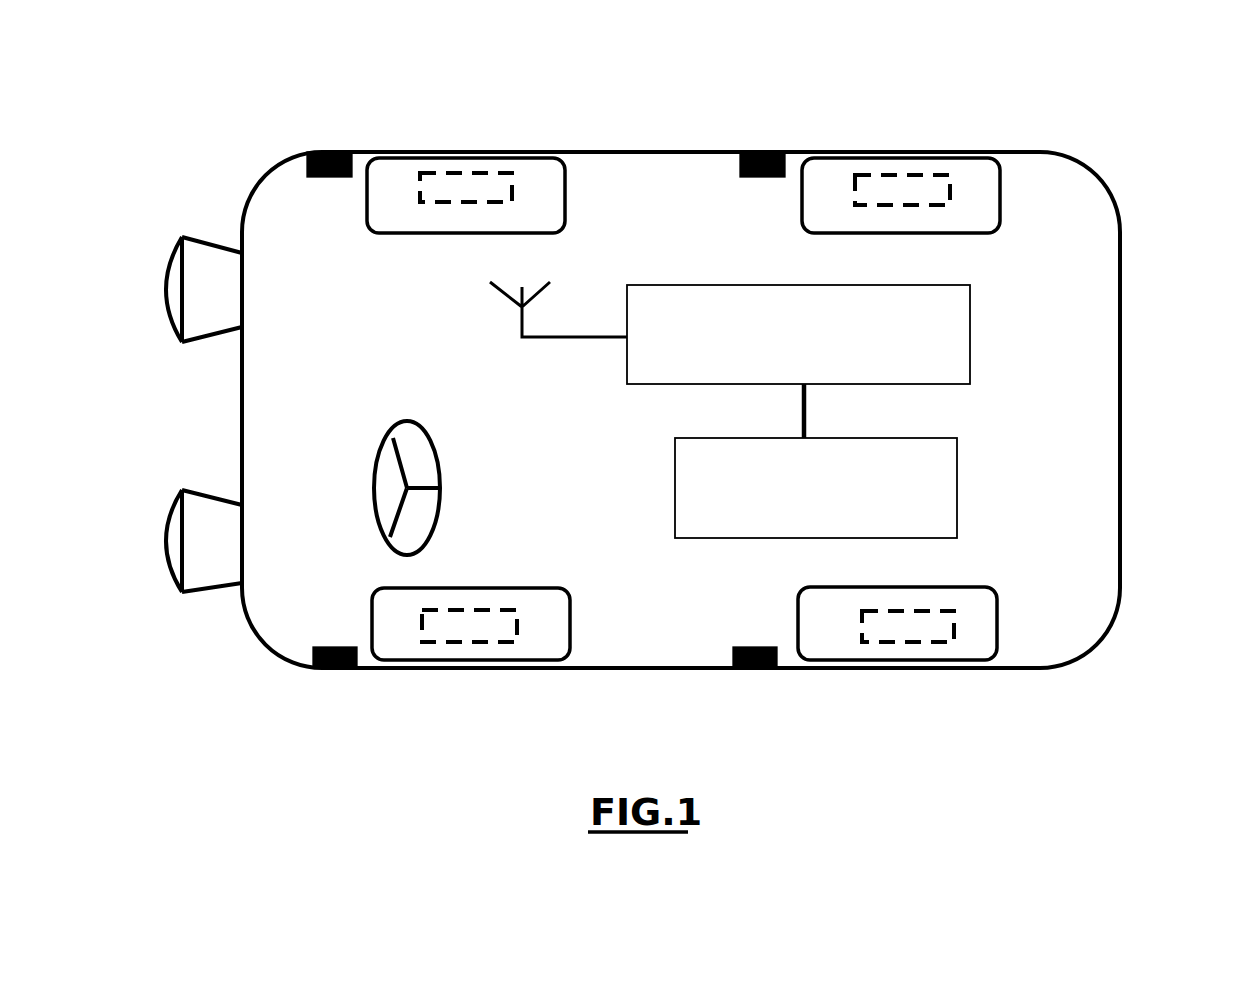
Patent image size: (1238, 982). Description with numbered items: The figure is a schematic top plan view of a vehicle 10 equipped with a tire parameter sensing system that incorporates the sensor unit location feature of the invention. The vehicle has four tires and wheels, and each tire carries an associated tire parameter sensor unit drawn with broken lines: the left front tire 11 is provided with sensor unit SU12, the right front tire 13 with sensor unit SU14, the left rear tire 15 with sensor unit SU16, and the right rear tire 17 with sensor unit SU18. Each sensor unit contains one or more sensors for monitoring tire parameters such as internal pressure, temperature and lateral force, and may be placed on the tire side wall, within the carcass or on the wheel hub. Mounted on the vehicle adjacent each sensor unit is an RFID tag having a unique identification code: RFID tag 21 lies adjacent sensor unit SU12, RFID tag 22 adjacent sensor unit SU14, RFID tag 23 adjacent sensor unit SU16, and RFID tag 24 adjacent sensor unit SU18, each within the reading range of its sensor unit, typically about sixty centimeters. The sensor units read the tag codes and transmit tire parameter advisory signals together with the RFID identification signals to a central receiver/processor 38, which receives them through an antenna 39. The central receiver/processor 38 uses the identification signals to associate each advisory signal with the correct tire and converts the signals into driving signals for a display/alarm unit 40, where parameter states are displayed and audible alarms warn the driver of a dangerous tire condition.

The vehicle 10 is at (1088, 493).
The left front tire 11 is at (398, 640).
The right front tire 13 is at (393, 175).
The left rear tire 15 is at (838, 637).
The right rear tire 17 is at (820, 188).
The left front sensor unit SU12 is at (470, 630).
The right front sensor unit SU14 is at (483, 183).
The left rear sensor unit SU16 is at (917, 628).
The right rear sensor unit SU18 is at (928, 192).
The RFID tag 21 is at (302, 668).
The RFID tag 22 is at (339, 151).
The RFID tag 23 is at (748, 668).
The RFID tag 24 is at (757, 152).
The central receiver/processor 38 is at (943, 307).
The antenna 39 is at (528, 320).
The display/alarm unit 40 is at (940, 470).